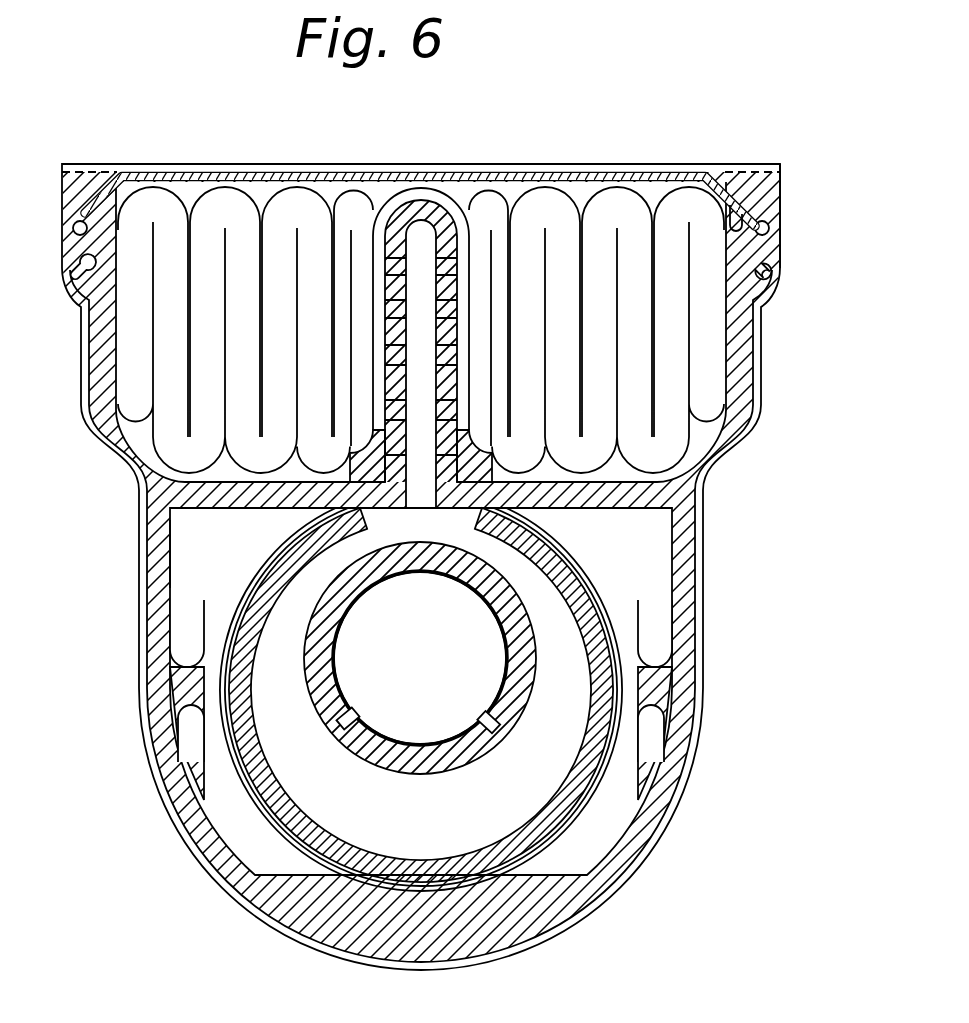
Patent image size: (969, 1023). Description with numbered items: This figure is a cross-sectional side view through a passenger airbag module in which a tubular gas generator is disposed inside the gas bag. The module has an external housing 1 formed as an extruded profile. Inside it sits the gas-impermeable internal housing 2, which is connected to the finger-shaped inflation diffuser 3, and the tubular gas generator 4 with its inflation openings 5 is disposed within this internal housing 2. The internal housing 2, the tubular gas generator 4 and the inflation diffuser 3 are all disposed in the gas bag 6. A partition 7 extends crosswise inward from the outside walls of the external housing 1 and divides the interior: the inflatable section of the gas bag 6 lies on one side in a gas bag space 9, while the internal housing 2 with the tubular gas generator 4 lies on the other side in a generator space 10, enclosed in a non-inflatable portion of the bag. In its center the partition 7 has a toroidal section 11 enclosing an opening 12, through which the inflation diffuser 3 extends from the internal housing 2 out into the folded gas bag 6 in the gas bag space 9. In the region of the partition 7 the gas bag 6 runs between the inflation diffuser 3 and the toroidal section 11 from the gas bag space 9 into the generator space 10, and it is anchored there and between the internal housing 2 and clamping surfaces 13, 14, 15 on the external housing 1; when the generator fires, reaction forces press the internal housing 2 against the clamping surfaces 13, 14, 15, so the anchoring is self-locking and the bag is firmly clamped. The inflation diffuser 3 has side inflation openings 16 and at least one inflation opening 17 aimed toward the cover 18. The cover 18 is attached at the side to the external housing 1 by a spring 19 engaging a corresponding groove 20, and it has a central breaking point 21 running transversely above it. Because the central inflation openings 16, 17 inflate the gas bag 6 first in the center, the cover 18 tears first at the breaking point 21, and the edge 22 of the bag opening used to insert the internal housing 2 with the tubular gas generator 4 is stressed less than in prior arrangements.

The external housing 1 is at (680, 742).
The internal housing 2 is at (600, 793).
The inflation diffuser 3 is at (417, 207).
The tubular gas generator 4 is at (545, 590).
The inflation openings 5 is at (503, 738).
The gas bag 6 is at (148, 203).
The partition 7 is at (237, 493).
The gas bag space 9 is at (459, 192).
The generator space 10 is at (190, 598).
The toroidal section 11 is at (307, 512).
The opening 12 is at (590, 438).
The clamping surface 13 is at (210, 727).
The clamping surface 14 is at (290, 927).
The clamping surface 15 is at (645, 675).
The side inflation openings 16 is at (445, 382).
The inflation opening 17 is at (425, 210).
The cover 18 is at (566, 180).
The spring 19 is at (780, 165).
The groove 20 is at (770, 207).
The breaking point 21 is at (421, 207).
The edge of the opening in the gas bag 22 is at (637, 592).